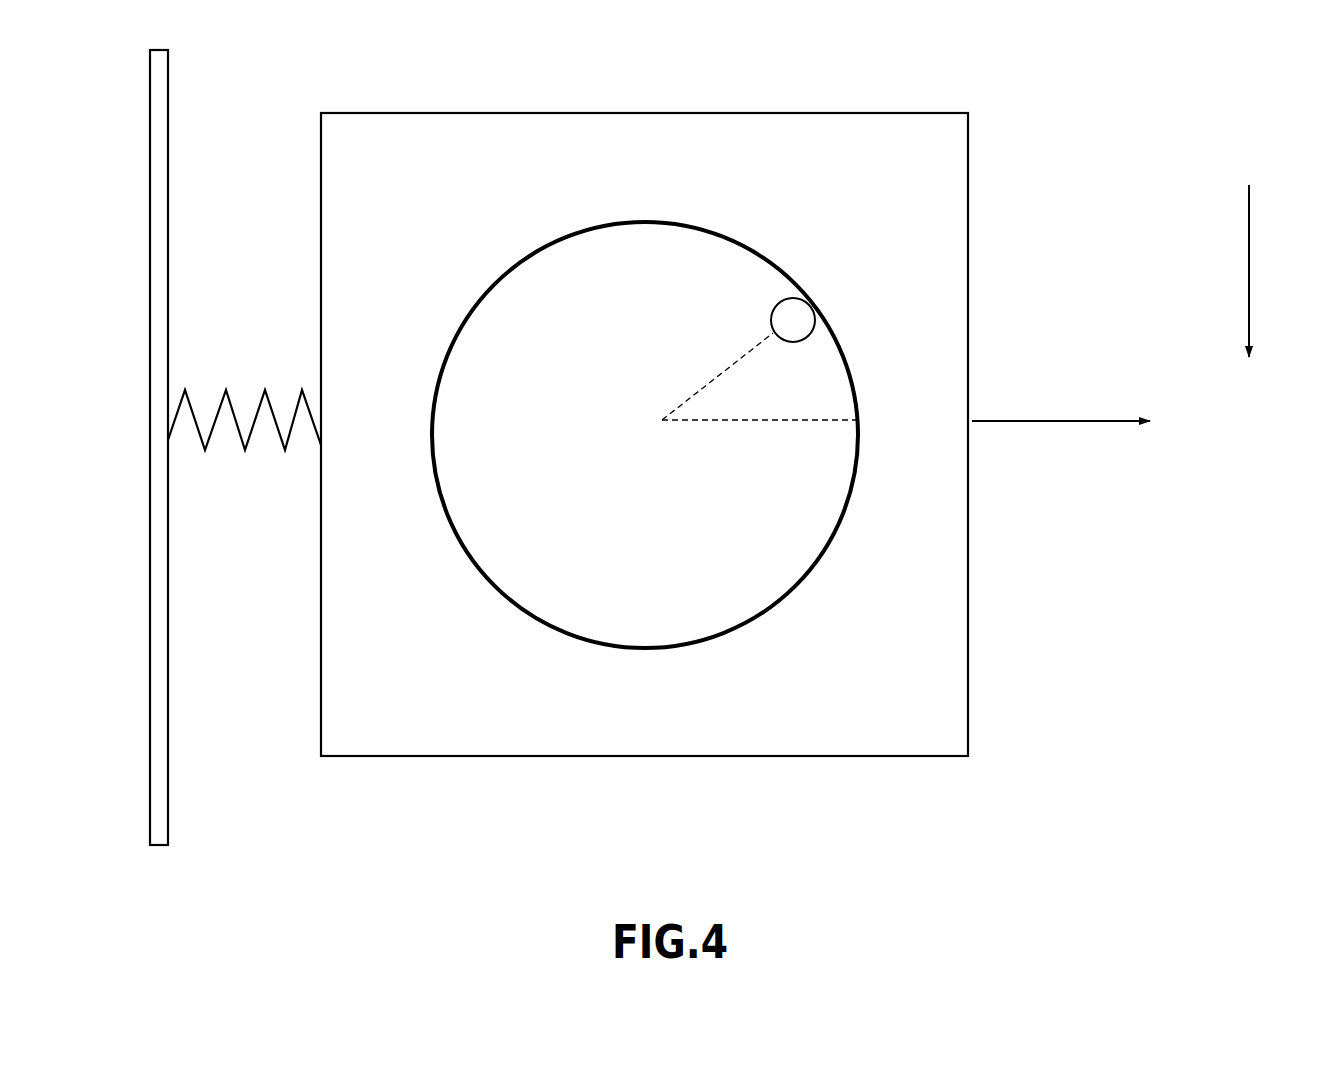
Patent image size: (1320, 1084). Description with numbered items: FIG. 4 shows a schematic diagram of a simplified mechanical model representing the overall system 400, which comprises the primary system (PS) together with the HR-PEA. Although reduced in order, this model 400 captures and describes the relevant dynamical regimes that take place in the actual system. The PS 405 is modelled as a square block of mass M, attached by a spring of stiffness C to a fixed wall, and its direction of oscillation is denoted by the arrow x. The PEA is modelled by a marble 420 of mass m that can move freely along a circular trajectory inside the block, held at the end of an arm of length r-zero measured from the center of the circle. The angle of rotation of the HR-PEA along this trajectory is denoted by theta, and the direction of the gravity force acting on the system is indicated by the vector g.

The overall system 400 is at (699, 459).
The primary system 405 is at (644, 421).
The marble 420 is at (790, 323).